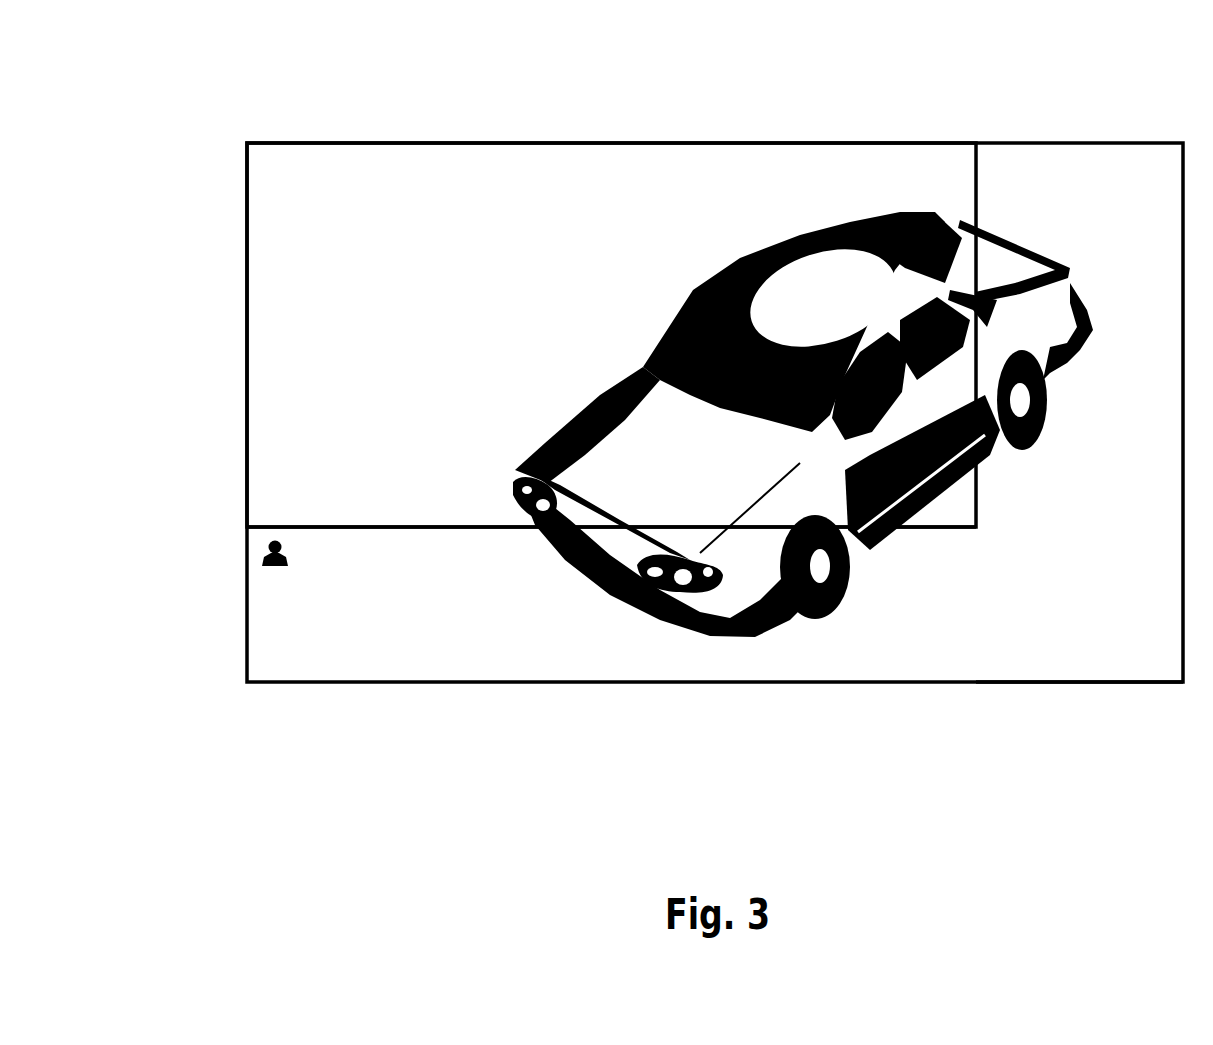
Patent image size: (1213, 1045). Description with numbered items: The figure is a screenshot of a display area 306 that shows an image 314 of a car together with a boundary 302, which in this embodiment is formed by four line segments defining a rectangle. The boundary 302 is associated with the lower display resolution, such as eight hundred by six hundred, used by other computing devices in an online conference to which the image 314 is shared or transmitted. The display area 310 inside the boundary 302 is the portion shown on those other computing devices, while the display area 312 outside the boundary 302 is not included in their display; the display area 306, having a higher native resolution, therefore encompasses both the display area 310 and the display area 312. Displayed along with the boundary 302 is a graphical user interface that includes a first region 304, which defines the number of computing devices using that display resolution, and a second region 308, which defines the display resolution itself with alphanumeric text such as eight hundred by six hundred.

The boundary 302 is at (388, 527).
The first region 304 is at (337, 570).
The display area 306 is at (1137, 142).
The second region 308 is at (473, 570).
The display area inside boundary 310 is at (481, 307).
The display area outside boundary 312 is at (1088, 590).
The image 314 is at (700, 280).